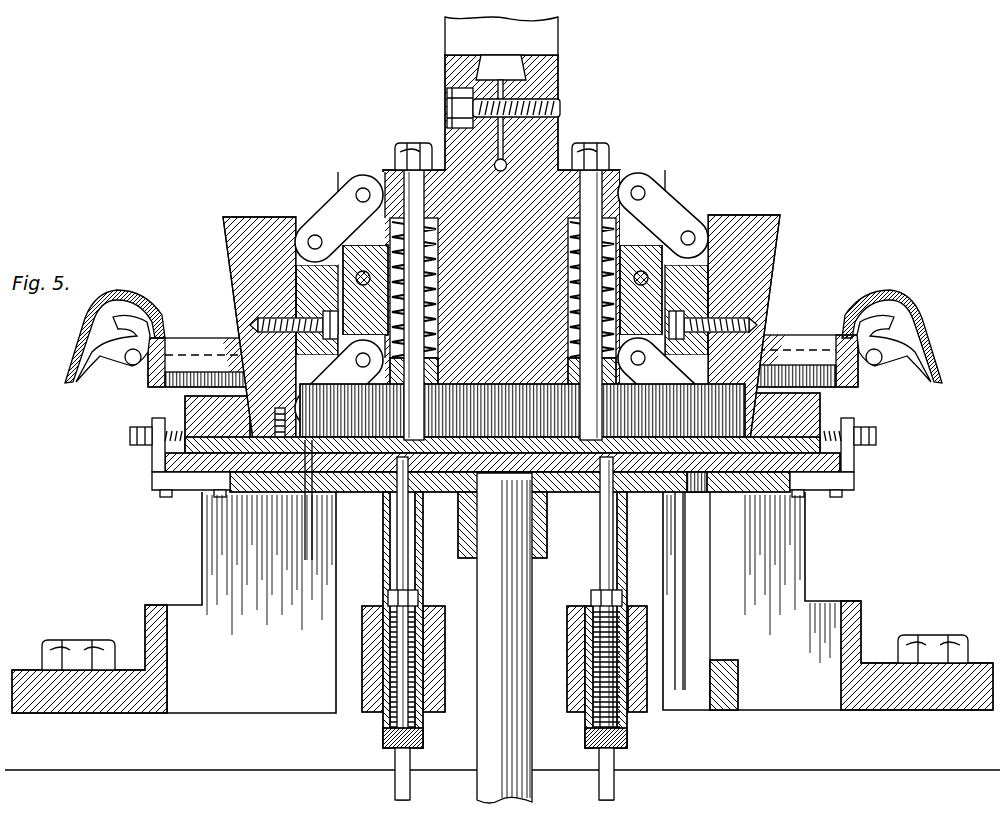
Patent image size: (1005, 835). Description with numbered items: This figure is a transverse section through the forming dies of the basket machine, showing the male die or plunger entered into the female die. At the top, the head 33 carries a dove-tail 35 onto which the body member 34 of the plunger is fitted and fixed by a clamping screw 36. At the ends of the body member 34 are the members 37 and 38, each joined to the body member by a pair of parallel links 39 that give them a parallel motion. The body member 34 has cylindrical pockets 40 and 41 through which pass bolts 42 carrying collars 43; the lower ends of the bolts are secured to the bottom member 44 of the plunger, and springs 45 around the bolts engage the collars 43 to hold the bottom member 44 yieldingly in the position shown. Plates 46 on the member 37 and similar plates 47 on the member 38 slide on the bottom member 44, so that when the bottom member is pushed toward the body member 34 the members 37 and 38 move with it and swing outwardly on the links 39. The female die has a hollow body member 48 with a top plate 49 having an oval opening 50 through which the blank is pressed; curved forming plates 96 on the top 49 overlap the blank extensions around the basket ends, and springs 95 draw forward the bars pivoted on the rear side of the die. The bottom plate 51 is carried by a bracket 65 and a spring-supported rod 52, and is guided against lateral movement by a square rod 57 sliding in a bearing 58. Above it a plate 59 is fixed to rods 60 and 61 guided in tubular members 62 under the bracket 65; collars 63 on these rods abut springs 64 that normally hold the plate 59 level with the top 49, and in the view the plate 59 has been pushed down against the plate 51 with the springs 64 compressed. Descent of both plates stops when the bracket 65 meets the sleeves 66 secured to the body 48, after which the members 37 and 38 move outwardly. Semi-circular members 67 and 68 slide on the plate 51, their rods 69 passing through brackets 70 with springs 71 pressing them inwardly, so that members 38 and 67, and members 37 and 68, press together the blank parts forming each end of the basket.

The head 33 is at (445, 38).
The body member 34 is at (456, 152).
The dove-tail 35 is at (486, 60).
The clamping screw 36 is at (447, 100).
The member 37 is at (738, 218).
The member 38 is at (262, 218).
The links 39 is at (346, 203).
The cylindrical pocket 40 is at (365, 278).
The cylindrical pocket 41 is at (641, 278).
The bolts 42 is at (404, 180).
The collars 43 is at (503, 371).
The bottom member 44 is at (505, 445).
The springs 45 is at (567, 270).
The plates 46 is at (678, 440).
The plates 47 is at (308, 462).
The hollow body member 48 is at (230, 585).
The top plate 49 is at (150, 377).
The oval opening 50 is at (776, 352).
The bottom plate 51 is at (165, 463).
The rod 52 is at (477, 736).
The square rod 57 is at (705, 615).
The bearing 58 is at (738, 712).
The plate 59 is at (421, 556).
The rod 60 is at (400, 552).
The rod 61 is at (618, 578).
The tubular members 62 is at (383, 737).
The collars 63 is at (418, 597).
The springs 64 is at (390, 660).
The bracket 65 is at (300, 490).
The sleeves 66 is at (362, 625).
The semi-circular member 67 is at (185, 405).
The semi-circular member 68 is at (820, 405).
The rods 69 is at (130, 438).
The brackets 70 is at (160, 480).
The springs 71 is at (154, 420).
The springs 95 is at (128, 362).
The curved forming plates 96 is at (80, 340).